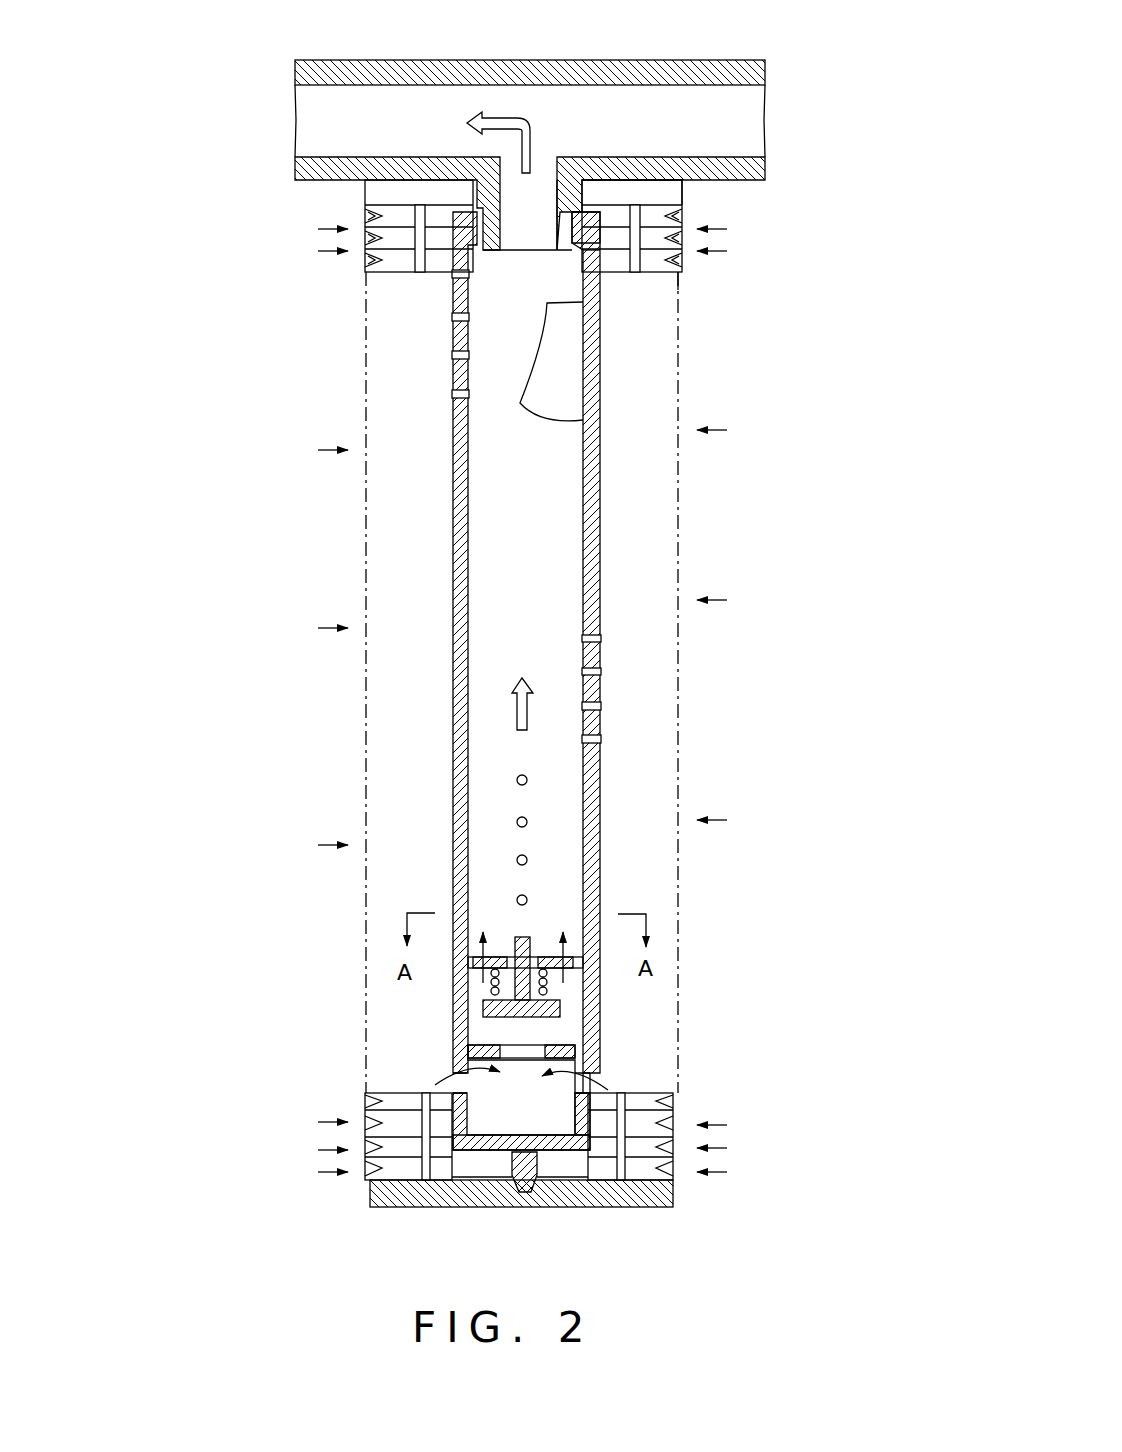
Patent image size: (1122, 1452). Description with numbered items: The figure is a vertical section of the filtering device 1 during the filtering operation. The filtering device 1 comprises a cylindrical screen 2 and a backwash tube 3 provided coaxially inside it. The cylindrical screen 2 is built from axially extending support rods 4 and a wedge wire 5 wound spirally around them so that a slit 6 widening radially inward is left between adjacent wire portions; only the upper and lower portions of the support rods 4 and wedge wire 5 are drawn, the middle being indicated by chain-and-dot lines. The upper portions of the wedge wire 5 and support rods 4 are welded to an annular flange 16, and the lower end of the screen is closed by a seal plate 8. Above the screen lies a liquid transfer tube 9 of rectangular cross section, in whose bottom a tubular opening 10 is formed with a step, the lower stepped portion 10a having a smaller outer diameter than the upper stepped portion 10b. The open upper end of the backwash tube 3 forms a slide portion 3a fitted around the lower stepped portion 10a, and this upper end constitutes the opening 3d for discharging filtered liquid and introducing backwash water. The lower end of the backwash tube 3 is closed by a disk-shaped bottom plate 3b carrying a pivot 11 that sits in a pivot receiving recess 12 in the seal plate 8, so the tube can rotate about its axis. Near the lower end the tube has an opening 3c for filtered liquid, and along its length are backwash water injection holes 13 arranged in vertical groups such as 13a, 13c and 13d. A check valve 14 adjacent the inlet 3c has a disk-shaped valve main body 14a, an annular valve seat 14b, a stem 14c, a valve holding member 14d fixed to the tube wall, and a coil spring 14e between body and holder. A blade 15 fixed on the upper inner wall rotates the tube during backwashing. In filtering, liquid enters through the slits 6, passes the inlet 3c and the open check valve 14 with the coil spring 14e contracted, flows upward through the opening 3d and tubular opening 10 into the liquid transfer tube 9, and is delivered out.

The filtering device 1 is at (730, 276).
The cylindrical screen 2 is at (680, 550).
The backwash tube 3 is at (597, 494).
The slide portion 3a is at (591, 222).
The bottom plate 3b is at (493, 1151).
The opening for filtered liquid 3c is at (590, 1092).
The opening for discharging filtered liquid and introducing backwash water 3d is at (575, 272).
The support rods 4 is at (420, 274).
The wedge wire 5 is at (365, 213).
The slit 6 is at (365, 251).
The seal plate 8 is at (673, 1195).
The liquid transfer tube 9 is at (446, 66).
The tubular opening 10 is at (540, 205).
The lower stepped portion 10a is at (530, 275).
The upper stepped portion 10b is at (565, 200).
The pivot 11 is at (537, 1172).
The pivot receiving recess 12 is at (508, 1192).
The backwash water injection holes 13 is at (408, 407).
The group of injection holes 13a is at (452, 394).
The group of injection holes 13c is at (600, 739).
The group of injection holes 13d is at (517, 900).
The check valve 14 is at (553, 1032).
The valve main body 14a is at (483, 1008).
The valve seat 14b is at (472, 1050).
The stem 14c is at (514, 950).
The valve holding member 14d is at (556, 960).
The coil spring 14e is at (550, 992).
The blade 15 is at (567, 378).
The annular flange 16 is at (680, 191).